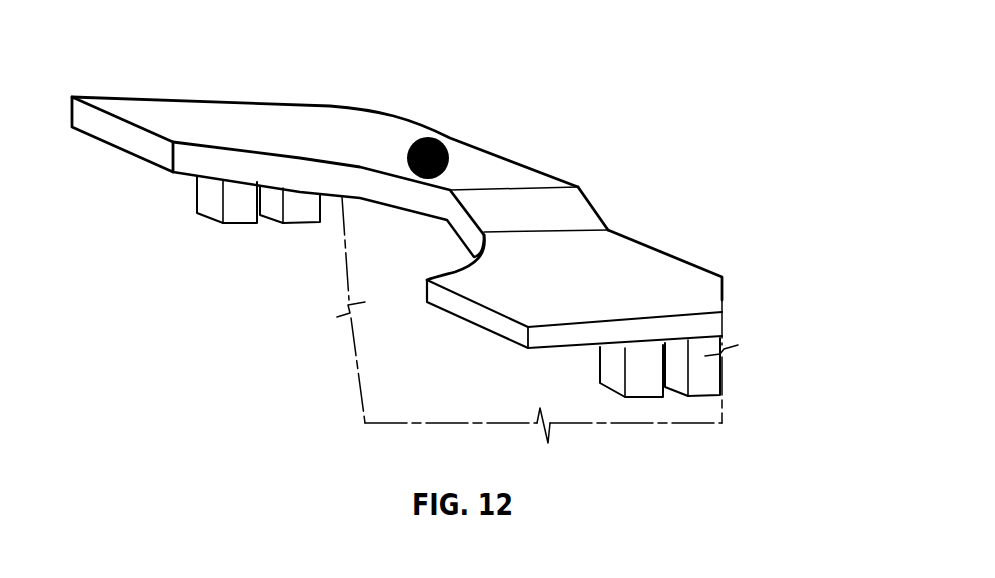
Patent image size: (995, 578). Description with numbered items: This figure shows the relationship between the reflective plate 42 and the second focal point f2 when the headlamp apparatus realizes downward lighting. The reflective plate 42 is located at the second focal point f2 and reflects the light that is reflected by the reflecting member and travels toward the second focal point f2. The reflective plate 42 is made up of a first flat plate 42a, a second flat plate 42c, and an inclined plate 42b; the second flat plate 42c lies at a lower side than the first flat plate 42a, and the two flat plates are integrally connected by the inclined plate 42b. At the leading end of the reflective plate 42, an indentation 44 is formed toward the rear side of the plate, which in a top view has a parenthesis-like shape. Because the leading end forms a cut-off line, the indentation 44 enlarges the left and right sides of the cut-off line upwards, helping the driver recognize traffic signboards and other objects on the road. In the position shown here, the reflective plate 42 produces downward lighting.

The reflective plate 42 is at (465, 221).
The first flat plate 42a is at (319, 124).
The inclined plate 42b is at (577, 210).
The second flat plate 42c is at (632, 267).
The indentation 44 is at (285, 168).
The second focal point f2 is at (500, 110).